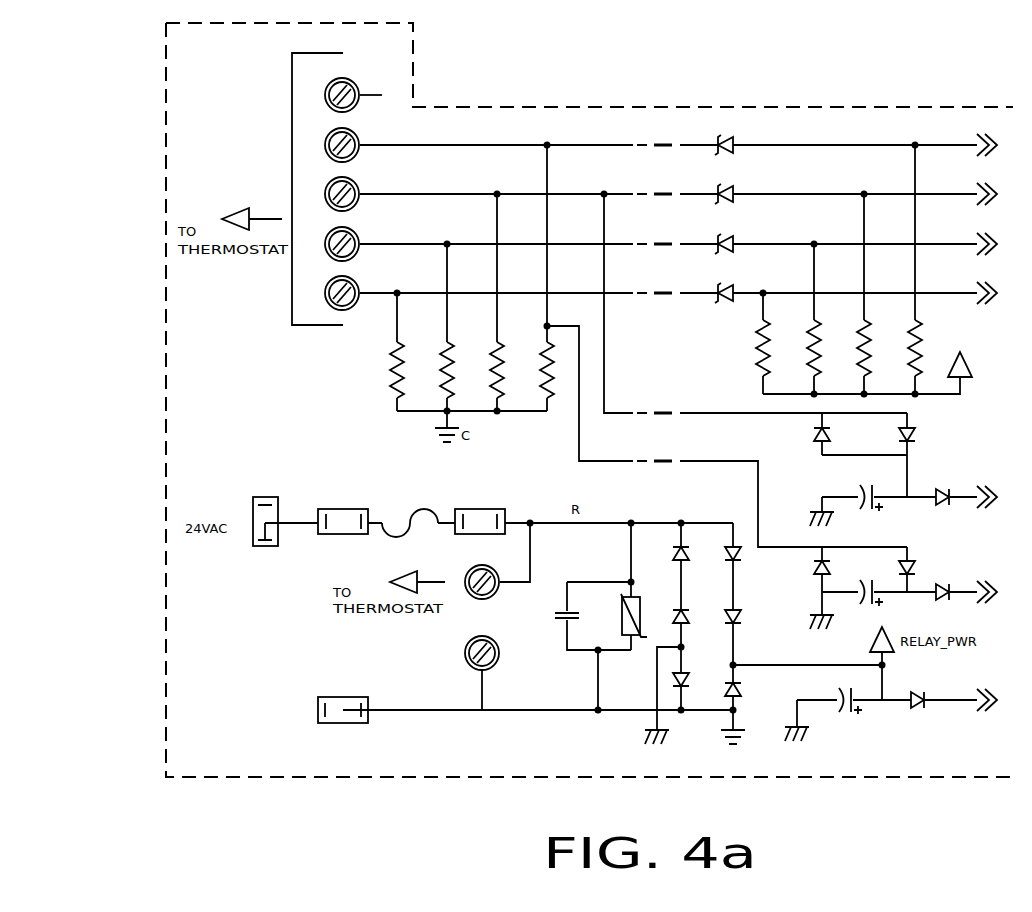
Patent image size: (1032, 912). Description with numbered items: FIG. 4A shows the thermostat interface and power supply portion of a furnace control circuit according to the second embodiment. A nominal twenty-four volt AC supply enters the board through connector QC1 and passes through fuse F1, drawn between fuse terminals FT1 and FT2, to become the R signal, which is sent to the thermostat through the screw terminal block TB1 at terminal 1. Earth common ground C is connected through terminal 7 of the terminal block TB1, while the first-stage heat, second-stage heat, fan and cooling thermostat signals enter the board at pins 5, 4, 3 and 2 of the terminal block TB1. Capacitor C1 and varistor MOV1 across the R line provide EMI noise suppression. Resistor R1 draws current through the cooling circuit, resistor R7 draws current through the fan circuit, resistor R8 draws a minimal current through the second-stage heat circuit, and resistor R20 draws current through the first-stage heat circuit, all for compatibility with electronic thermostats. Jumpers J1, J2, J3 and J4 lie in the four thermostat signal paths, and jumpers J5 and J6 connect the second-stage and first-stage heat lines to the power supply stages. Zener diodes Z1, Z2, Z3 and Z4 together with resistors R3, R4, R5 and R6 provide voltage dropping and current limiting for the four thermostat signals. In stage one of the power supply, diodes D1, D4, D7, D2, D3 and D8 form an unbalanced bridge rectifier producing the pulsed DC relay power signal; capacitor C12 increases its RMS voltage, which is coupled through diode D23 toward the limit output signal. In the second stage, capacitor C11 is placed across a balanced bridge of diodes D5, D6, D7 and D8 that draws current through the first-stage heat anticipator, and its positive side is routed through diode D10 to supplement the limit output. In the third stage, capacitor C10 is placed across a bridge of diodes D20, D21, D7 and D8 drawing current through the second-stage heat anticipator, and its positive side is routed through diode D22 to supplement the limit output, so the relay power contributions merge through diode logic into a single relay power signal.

The screw terminal block TB1 is at (406, 361).
The terminal No. 1 of TB1 1 is at (333, 145).
The pin 2 of TB1 2 is at (333, 194).
The pin 3 of TB1 3 is at (333, 244).
The pin 4 of TB1 4 is at (333, 293).
The pin 5 of TB1 5 is at (345, 95).
The terminal No. 7 of TB1 7 is at (474, 579).
The jumper J1 is at (663, 136).
The jumper J2 is at (663, 185).
The jumper J3 is at (663, 235).
The jumper J4 is at (663, 284).
The jumper J5 is at (663, 404).
The jumper J6 is at (663, 452).
The zener diode Z1 is at (719, 285).
The zener diode Z2 is at (719, 236).
The zener diode Z3 is at (719, 186).
The zener diode Z4 is at (719, 137).
The resistor R1 is at (391, 352).
The resistor R3 is at (756, 343).
The resistor R4 is at (807, 319).
The resistor R5 is at (857, 294).
The resistor R6 is at (908, 269).
The resistor R7 is at (440, 327).
The resistor R8 is at (490, 302).
The resistor R20 is at (536, 368).
The diode D1 is at (669, 549).
The diode D2 is at (720, 549).
The diode D3 is at (744, 620).
The diode D4 is at (690, 611).
The diode D5 is at (809, 569).
The diode D6 is at (917, 569).
The diode D7 is at (690, 678).
The diode D8 is at (744, 687).
The diode D10 is at (942, 601).
The diode D20 is at (805, 434).
The diode D21 is at (922, 455).
The diode D22 is at (942, 506).
The diode D23 is at (929, 712).
The capacitor C1 is at (559, 627).
The capacitor C10 is at (864, 490).
The capacitor C11 is at (864, 585).
The capacitor C12 is at (839, 712).
The varistor MOV1 is at (611, 613).
The connector QC1 is at (263, 511).
The fuse terminal FT1 is at (343, 511).
The fuse terminal FT2 is at (480, 511).
The fuse F1 is at (410, 512).